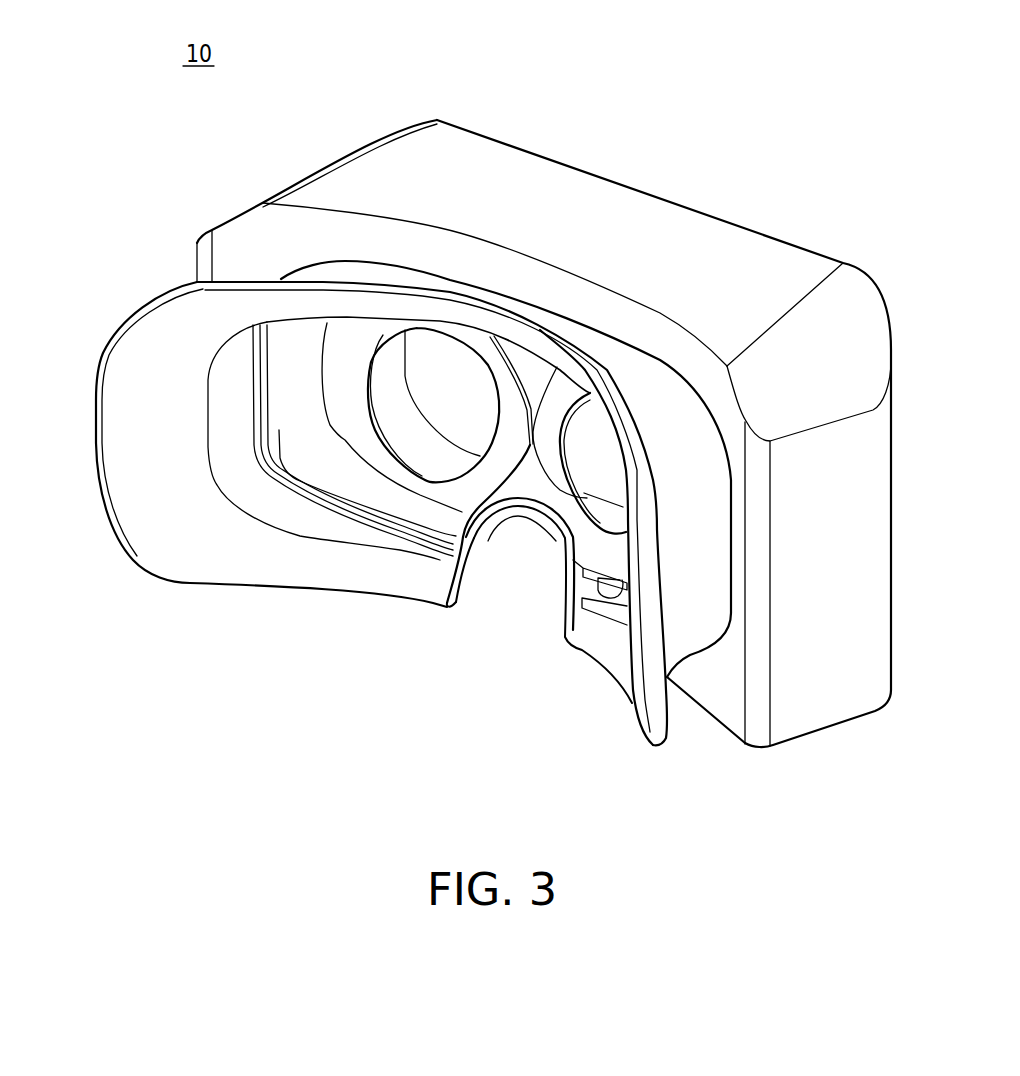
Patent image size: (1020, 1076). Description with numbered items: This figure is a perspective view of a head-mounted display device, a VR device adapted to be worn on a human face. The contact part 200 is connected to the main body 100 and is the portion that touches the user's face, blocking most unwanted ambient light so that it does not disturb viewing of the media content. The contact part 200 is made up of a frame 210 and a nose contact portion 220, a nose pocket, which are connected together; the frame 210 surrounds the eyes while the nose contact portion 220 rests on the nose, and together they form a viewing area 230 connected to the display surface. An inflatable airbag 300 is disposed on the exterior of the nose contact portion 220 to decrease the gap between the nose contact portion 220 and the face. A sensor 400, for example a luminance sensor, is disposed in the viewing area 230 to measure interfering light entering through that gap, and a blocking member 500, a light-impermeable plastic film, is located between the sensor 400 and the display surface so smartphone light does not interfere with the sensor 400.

The main body 100 is at (698, 238).
The contact part 200 is at (361, 513).
The frame 210 is at (287, 557).
The nose contact portion 220 is at (458, 525).
The viewing area 230 is at (276, 475).
The airbag 300 is at (483, 551).
The sensor 400 is at (608, 580).
The blocking member 500 is at (585, 576).